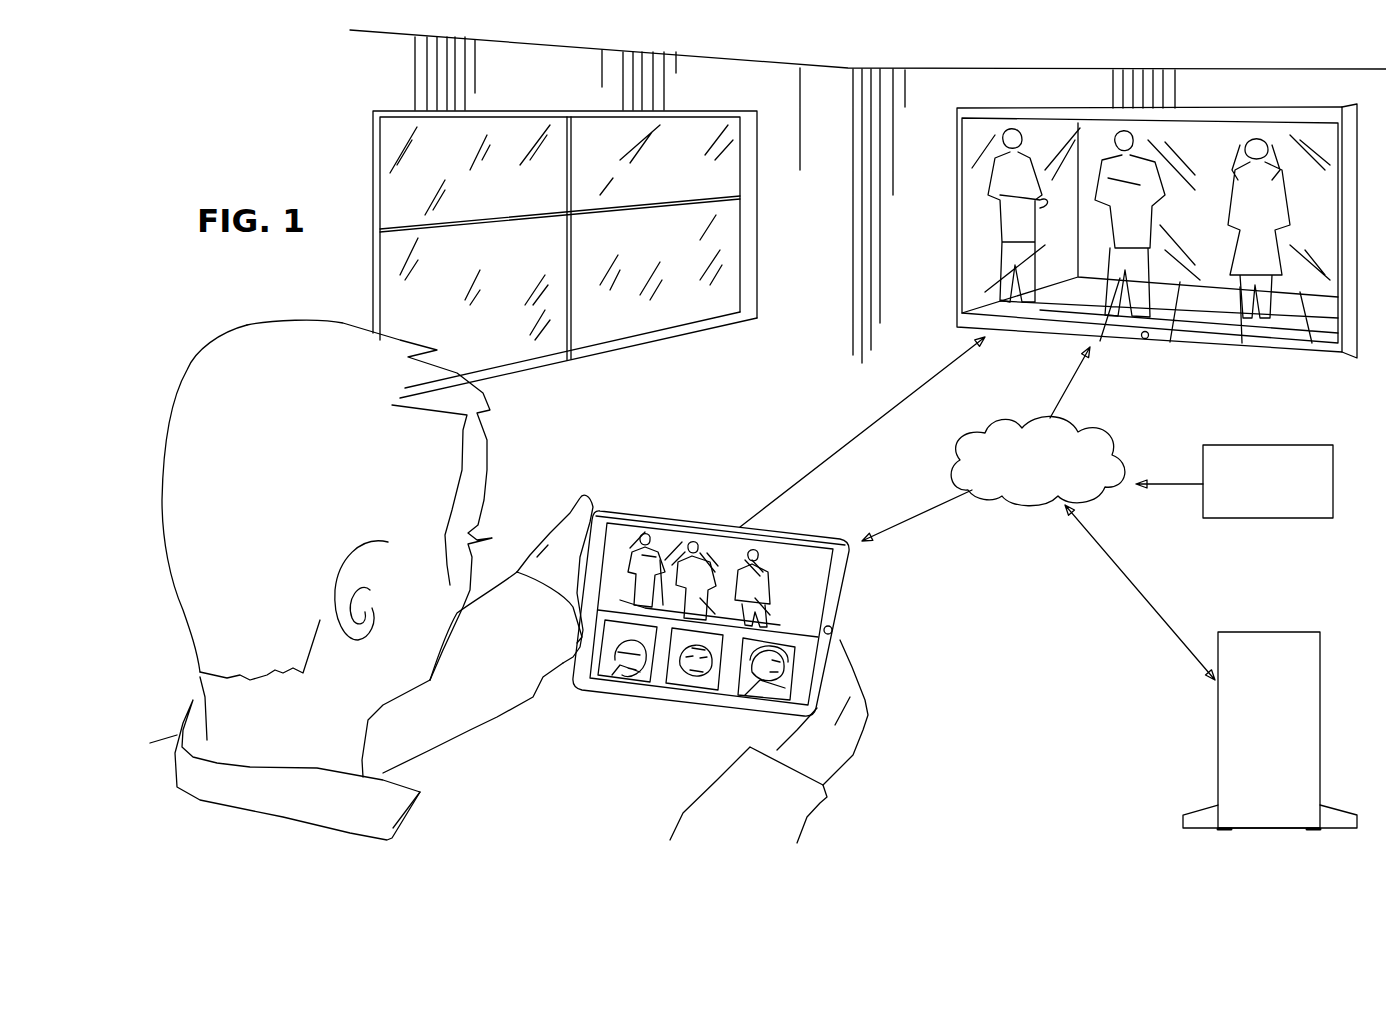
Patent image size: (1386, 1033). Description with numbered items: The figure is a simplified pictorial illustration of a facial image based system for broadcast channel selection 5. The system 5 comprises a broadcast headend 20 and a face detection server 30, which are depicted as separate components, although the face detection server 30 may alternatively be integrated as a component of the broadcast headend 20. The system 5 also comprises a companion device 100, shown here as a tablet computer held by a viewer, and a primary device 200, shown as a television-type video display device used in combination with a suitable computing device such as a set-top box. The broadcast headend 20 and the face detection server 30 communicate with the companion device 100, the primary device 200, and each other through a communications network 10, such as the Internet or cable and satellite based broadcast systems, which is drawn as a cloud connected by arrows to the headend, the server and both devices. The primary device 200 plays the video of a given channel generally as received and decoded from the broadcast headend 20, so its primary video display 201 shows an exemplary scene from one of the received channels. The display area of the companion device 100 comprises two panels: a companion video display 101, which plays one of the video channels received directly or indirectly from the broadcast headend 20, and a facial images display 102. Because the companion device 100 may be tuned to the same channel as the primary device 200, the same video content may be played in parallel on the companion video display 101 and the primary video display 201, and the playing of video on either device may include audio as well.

The facial image based system for broadcast channel selection 5 is at (284, 85).
The communications network 10 is at (988, 432).
The broadcast headend 20 is at (1293, 445).
The face detection server 30 is at (1278, 632).
The companion device 100 is at (759, 597).
The companion video display 101 is at (890, 560).
The facial images display 102 is at (890, 647).
The primary device 200 is at (1250, 108).
The primary video display 201 is at (1045, 130).